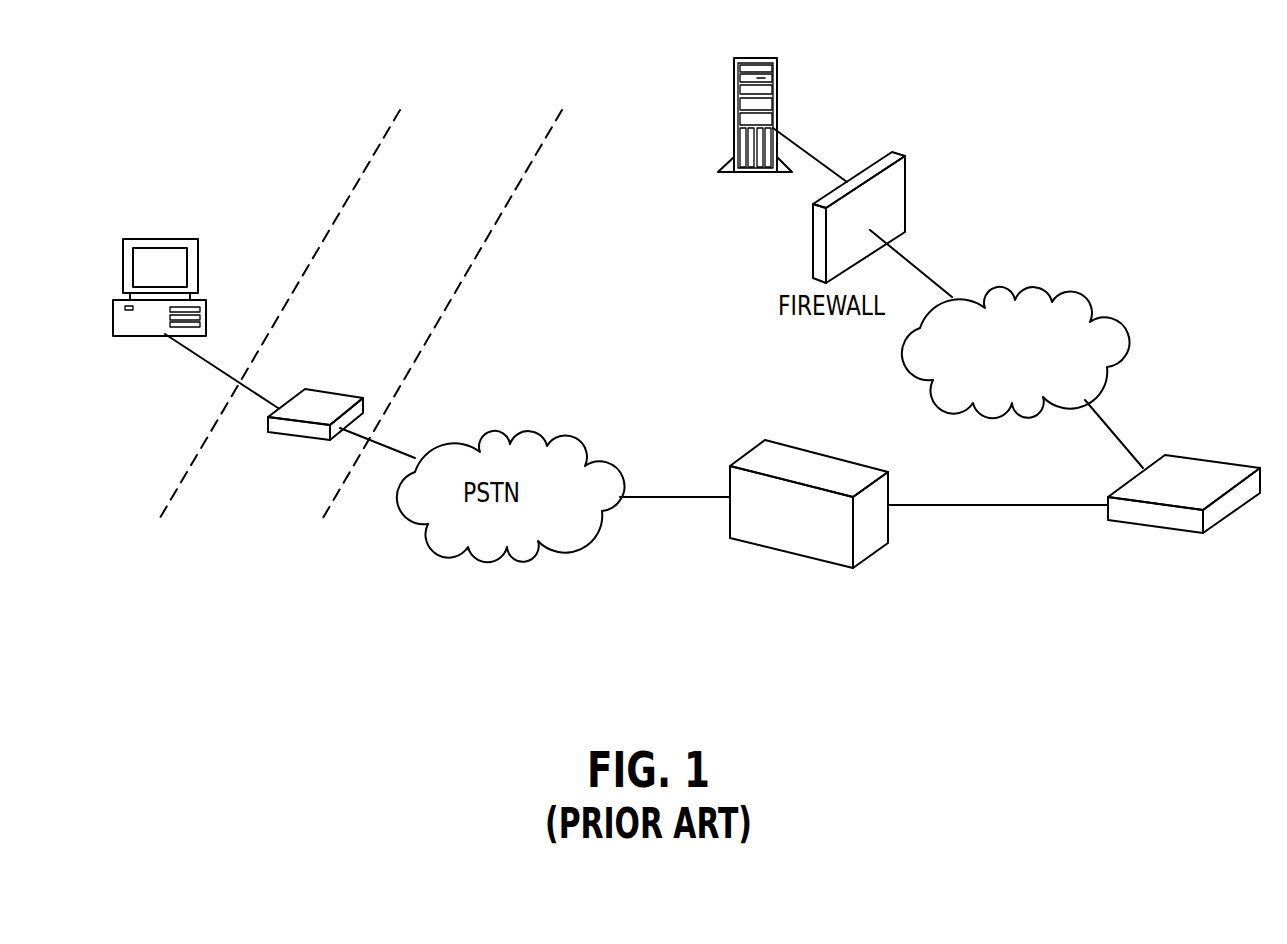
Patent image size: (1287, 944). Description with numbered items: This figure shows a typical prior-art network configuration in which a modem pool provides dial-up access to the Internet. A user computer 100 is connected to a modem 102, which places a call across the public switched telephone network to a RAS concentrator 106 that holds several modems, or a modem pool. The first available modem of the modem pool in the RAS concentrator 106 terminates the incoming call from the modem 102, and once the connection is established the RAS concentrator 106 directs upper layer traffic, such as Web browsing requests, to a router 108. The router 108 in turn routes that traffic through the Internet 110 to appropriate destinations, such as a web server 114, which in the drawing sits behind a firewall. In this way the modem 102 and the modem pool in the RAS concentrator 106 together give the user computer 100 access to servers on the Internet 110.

The user computer 100 is at (180, 237).
The modem 102 is at (347, 372).
The RAS concentrator 106 is at (787, 443).
The router 108 is at (1220, 442).
The Internet 110 is at (1082, 283).
The web server 114 is at (762, 53).